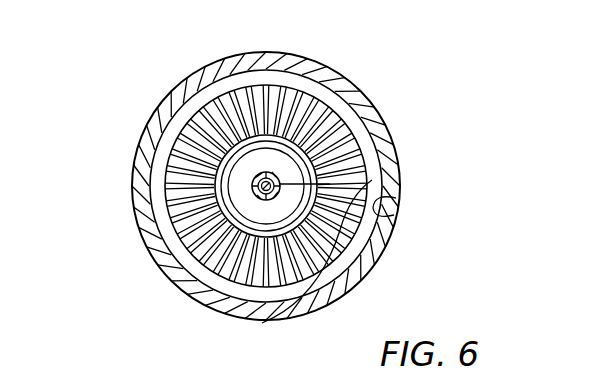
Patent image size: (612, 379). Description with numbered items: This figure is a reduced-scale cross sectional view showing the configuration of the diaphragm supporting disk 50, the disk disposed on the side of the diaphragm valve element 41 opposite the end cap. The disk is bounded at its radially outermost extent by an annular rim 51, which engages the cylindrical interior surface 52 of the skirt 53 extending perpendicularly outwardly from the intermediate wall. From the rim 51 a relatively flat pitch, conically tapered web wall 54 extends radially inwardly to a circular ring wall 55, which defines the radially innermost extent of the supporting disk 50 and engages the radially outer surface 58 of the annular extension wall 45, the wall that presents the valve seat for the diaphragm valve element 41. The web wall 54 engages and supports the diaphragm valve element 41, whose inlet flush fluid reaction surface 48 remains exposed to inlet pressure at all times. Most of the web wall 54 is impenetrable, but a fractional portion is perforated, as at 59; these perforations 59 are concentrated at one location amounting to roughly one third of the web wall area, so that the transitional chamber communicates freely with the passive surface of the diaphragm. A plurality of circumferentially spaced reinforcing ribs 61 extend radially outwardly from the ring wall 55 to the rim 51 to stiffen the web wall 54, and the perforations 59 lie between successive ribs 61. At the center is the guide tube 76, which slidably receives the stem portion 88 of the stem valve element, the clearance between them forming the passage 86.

The diaphragm valve element 41 is at (273, 214).
The annular extension wall 45 is at (348, 270).
The inlet flush fluid reaction surface 48 is at (258, 160).
The diaphragm supporting disk 50 is at (379, 115).
The annular rim 51 is at (152, 161).
The cylindrical interior surface 52 is at (392, 201).
The skirt 53 is at (386, 152).
The web wall 54 is at (302, 102).
The circular ring wall 55 is at (260, 136).
The radially outer surface 58 is at (366, 105).
The perforations 59 is at (197, 268).
The reinforcing ribs 61 is at (178, 230).
The guide tube 76 is at (330, 184).
The passage 86 is at (255, 180).
The stem portion 88 is at (285, 200).